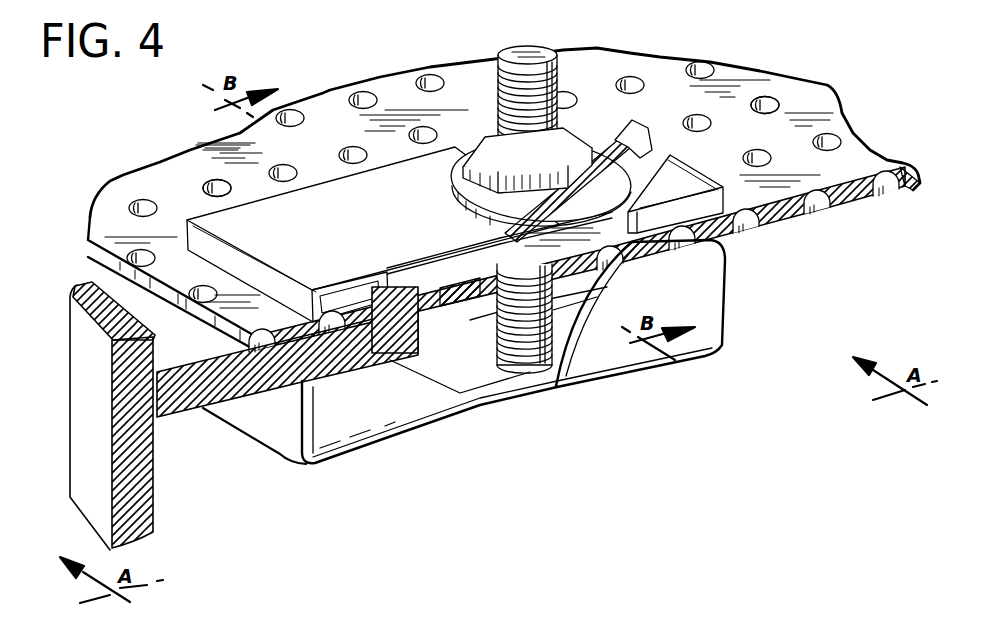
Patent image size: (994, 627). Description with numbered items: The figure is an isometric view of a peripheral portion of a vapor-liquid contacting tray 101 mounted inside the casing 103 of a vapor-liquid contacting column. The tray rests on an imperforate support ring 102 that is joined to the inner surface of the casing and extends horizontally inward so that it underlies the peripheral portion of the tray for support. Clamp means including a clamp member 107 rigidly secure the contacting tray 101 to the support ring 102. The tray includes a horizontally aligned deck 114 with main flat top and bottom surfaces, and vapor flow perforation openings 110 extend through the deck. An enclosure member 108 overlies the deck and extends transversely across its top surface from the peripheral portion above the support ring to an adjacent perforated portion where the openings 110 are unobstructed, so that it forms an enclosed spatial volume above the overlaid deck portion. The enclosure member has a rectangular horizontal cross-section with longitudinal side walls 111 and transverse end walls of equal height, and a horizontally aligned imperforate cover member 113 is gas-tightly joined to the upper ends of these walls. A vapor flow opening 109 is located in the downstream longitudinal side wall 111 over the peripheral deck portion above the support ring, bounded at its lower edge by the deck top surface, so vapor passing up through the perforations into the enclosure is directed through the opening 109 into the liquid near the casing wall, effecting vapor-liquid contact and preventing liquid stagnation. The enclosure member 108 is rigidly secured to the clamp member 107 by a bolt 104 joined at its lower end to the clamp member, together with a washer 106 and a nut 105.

The vapor-liquid contacting tray 101 is at (663, 77).
The imperforate support ring 102 is at (183, 398).
The casing 103 is at (147, 518).
The bolt 104 is at (531, 57).
The nut 105 is at (490, 127).
The washer 106 is at (497, 200).
The clamp member 107 is at (710, 292).
The enclosure member 108 is at (457, 263).
The vapor flow opening 109 is at (358, 300).
The vapor flow perforation openings 110 is at (207, 187).
The longitudinal side walls 111 is at (427, 275).
The imperforate cover member 113 is at (340, 230).
The deck 114 is at (242, 146).